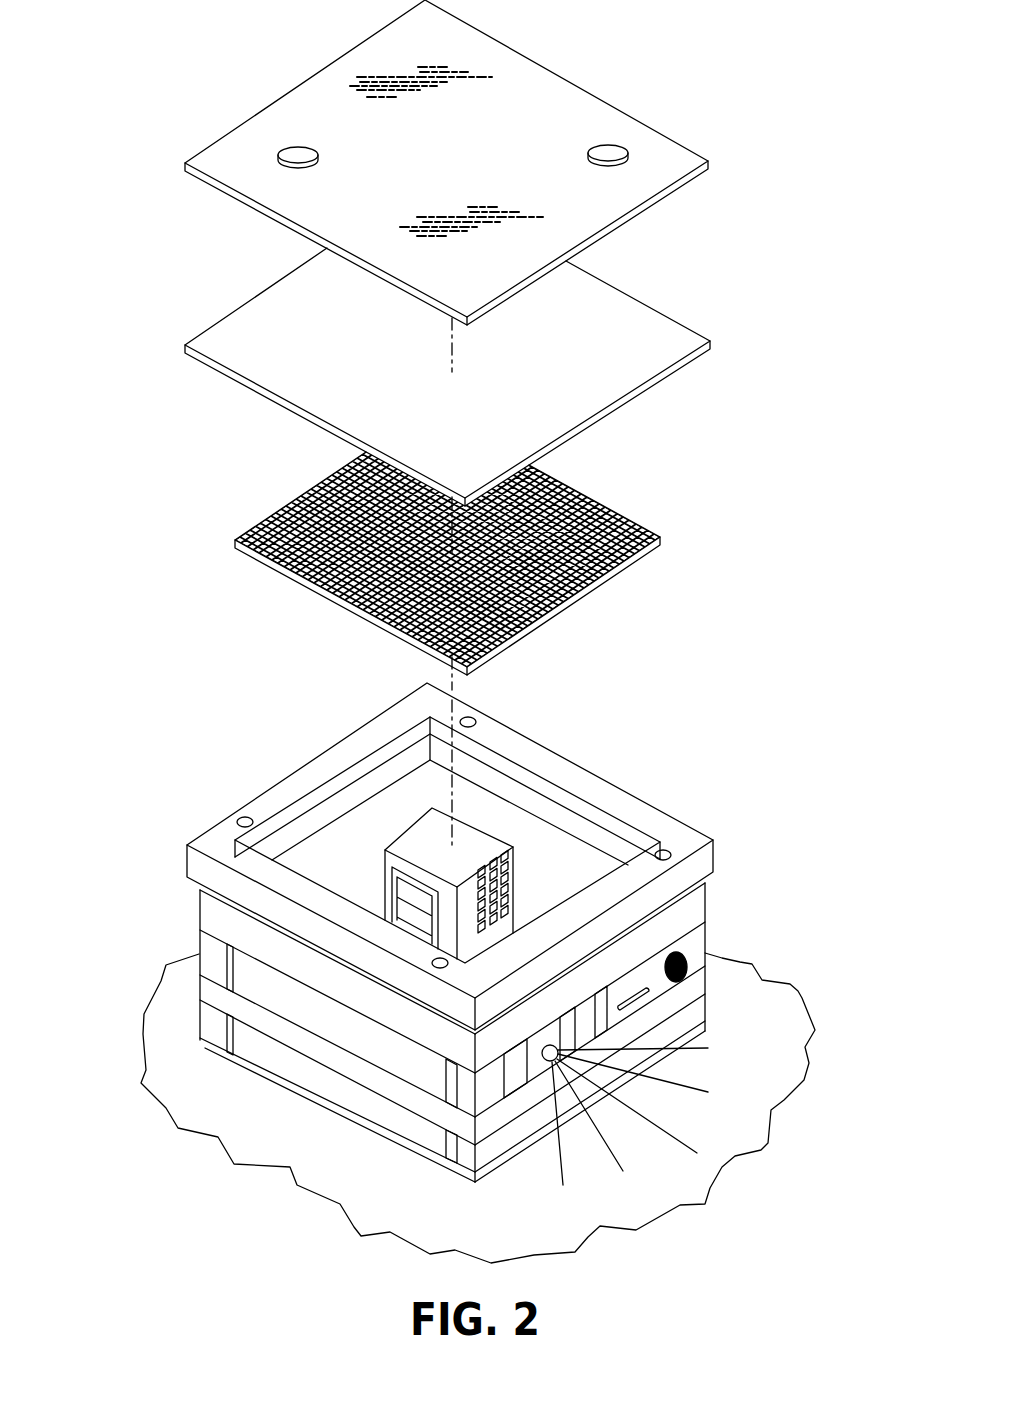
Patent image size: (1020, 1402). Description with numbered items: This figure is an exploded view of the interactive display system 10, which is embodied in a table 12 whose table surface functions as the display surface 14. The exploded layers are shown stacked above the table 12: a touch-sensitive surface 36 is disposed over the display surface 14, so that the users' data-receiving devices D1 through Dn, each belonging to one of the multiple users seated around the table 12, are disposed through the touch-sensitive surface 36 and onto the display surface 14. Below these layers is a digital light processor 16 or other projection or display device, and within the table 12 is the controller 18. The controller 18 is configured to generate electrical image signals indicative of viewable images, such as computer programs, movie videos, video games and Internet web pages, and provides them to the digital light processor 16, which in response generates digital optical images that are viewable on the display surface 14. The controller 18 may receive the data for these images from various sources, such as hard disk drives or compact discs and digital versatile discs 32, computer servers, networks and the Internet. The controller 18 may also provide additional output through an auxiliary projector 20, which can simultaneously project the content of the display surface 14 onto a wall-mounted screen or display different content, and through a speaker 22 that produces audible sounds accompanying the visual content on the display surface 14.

The interactive display system 10 is at (150, 0).
The touch-sensitive surface 36 is at (593, 77).
The data-receiving device D1 is at (297, 150).
The data-receiving device Dn is at (615, 154).
The display surface 14 is at (685, 363).
The digital light processor 16 is at (624, 511).
The table 12 is at (661, 803).
The controller 18 is at (474, 821).
The speaker 22 is at (689, 949).
The compact disc or digital versatile disc 32 is at (642, 1003).
The projector 20 is at (532, 1102).